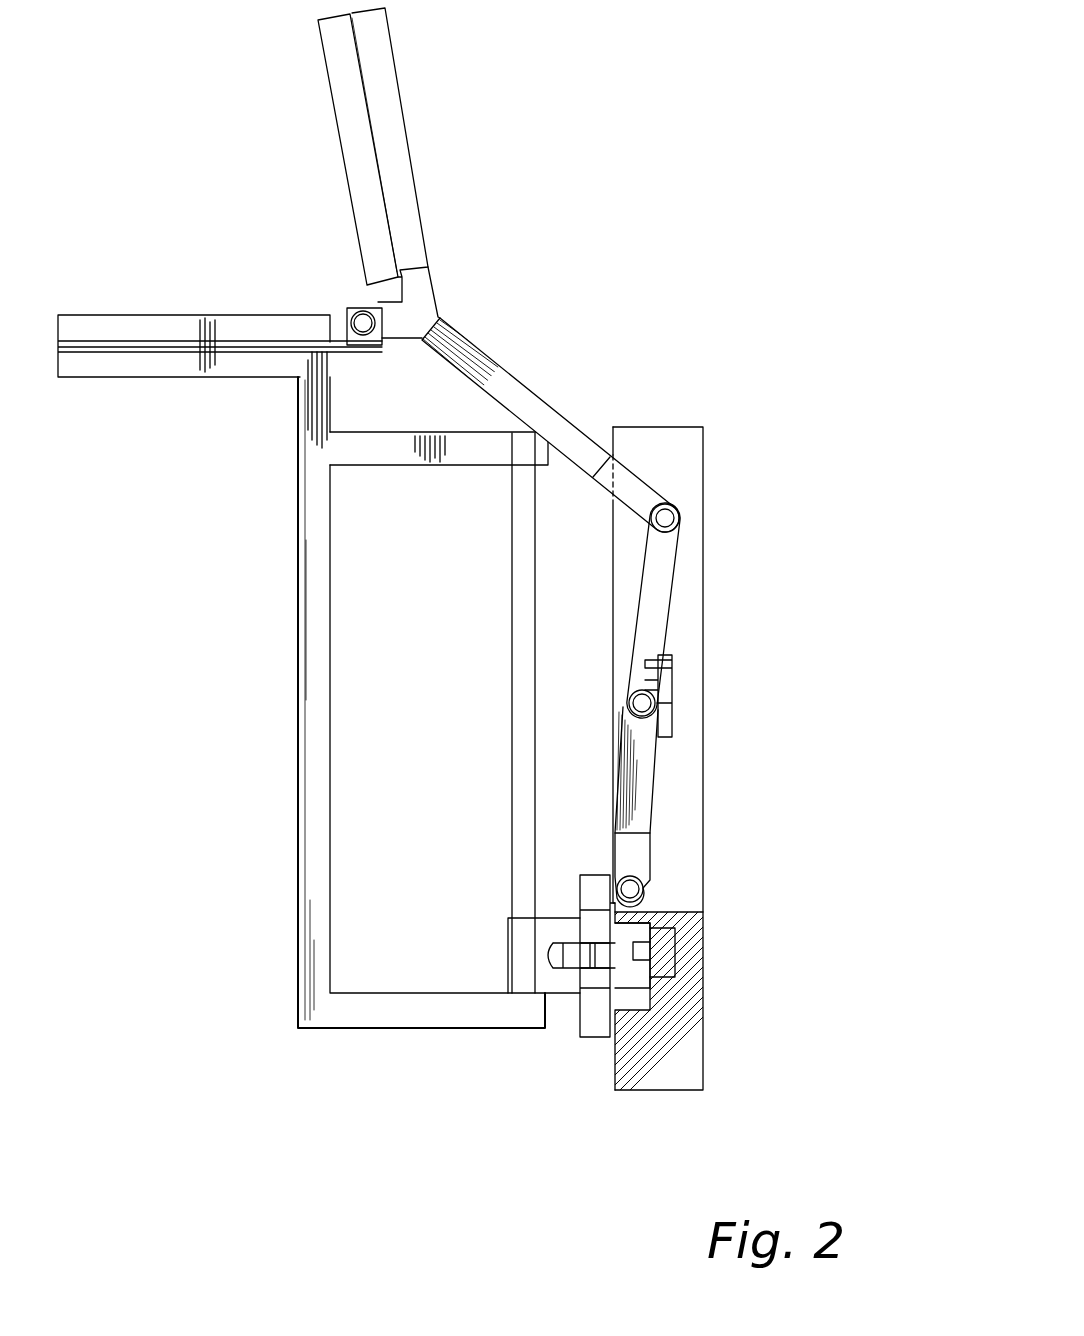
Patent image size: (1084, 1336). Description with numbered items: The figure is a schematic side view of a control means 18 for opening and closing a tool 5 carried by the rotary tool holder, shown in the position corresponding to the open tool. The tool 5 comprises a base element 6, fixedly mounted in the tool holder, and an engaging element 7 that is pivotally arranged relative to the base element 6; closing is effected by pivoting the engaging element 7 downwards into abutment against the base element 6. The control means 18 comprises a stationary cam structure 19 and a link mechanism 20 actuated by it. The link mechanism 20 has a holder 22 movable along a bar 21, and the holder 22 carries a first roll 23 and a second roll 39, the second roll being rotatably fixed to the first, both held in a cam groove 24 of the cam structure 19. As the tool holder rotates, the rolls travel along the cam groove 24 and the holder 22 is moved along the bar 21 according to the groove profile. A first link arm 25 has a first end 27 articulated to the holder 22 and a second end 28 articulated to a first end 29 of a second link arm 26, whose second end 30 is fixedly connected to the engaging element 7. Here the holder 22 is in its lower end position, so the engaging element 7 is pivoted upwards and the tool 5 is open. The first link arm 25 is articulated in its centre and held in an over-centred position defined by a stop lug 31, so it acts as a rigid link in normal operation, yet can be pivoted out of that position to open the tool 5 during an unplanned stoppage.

The tool 5 is at (176, 138).
The base element 6 is at (155, 362).
The engaging element 7 is at (400, 150).
The control means 18 is at (850, 566).
The cam structure 19 is at (688, 880).
The link mechanism 20 is at (645, 453).
The bar 21 is at (525, 768).
The holder 22 is at (568, 985).
The first roll 23 is at (632, 940).
The cam groove 24 is at (635, 1008).
The first link arm 25 is at (655, 622).
The second link arm 26 is at (540, 410).
The first end of the first link arm 27 is at (657, 860).
The second end of the first link arm 28 is at (694, 556).
The first end of the second link arm 29 is at (630, 529).
The second end of the second link arm 30 is at (470, 302).
The stop lug 31 is at (668, 720).
The second roll 39 is at (652, 957).